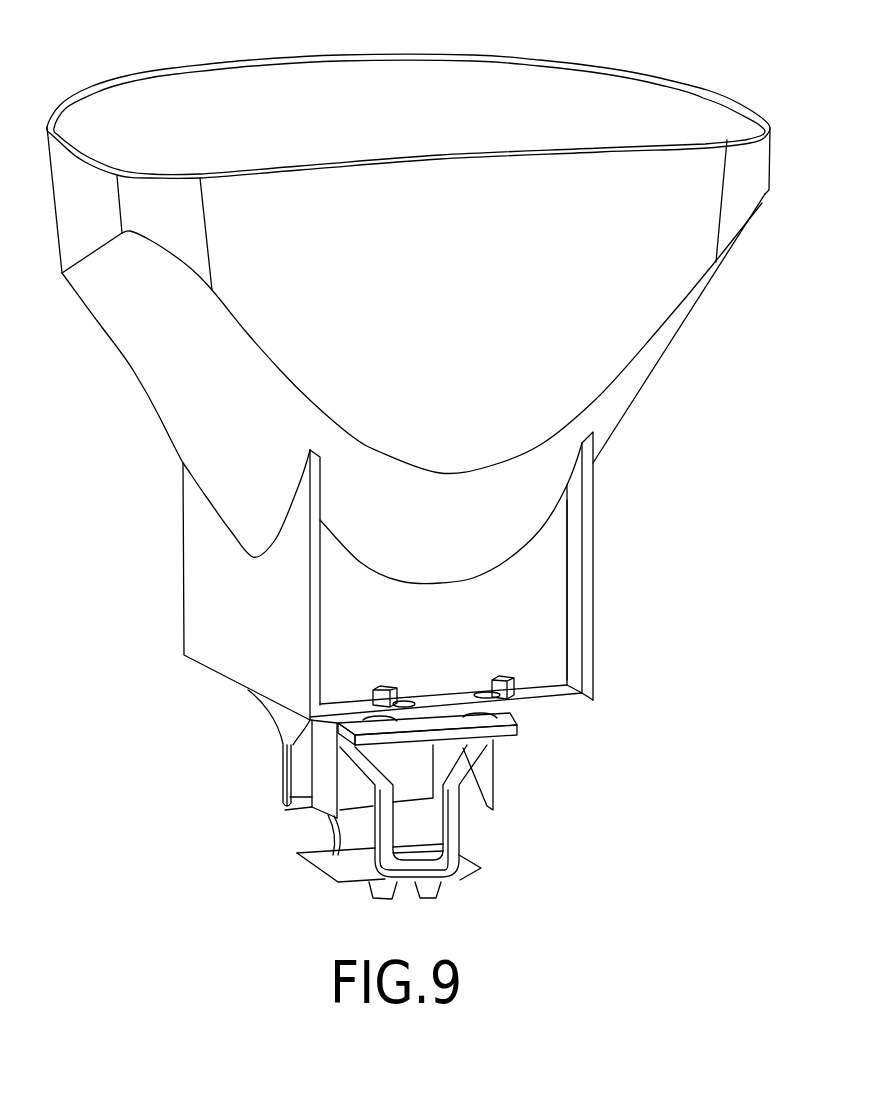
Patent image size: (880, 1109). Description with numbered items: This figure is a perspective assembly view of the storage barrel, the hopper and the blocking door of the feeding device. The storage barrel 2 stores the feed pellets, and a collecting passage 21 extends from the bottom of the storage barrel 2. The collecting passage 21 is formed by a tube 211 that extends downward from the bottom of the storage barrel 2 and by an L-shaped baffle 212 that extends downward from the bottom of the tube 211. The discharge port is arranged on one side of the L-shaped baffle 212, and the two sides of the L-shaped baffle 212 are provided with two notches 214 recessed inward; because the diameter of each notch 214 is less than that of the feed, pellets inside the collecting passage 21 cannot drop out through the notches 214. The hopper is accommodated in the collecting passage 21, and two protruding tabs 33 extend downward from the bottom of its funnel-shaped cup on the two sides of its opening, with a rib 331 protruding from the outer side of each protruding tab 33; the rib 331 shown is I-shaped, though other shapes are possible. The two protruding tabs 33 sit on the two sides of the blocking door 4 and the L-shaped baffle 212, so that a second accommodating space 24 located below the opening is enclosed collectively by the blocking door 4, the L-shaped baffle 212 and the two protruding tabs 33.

The storage barrel 2 is at (633, 203).
The collecting passage 21 is at (545, 607).
The tube 211 is at (547, 638).
The notch 214 is at (307, 829).
The L-shaped baffle 212 is at (343, 860).
The second accommodating space 24 is at (363, 823).
The blocking door 4 is at (455, 823).
The protruding tab 33 is at (327, 790).
The rib 331 is at (285, 768).